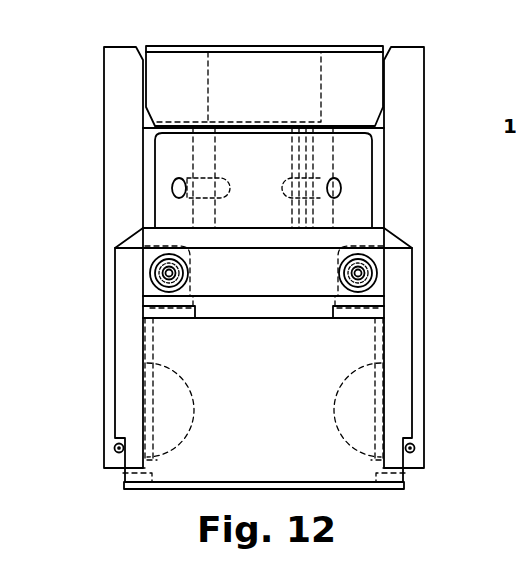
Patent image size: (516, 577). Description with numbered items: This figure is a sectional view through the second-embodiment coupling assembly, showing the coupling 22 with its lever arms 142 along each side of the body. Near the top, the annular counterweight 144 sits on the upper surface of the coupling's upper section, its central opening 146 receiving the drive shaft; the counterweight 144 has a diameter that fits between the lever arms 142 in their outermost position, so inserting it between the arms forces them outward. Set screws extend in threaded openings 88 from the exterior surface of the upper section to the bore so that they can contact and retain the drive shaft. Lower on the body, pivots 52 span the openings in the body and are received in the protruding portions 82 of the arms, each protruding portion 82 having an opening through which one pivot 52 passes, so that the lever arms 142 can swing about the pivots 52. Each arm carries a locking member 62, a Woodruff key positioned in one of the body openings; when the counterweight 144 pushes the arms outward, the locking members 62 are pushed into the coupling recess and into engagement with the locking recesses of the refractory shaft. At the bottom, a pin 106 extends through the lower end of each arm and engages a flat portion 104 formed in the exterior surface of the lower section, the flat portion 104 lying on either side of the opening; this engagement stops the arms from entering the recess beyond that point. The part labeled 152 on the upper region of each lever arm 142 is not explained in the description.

The lower housing body 22 is at (397, 335).
The roller 52 is at (150, 278).
The wheel 62 is at (175, 425).
The roller bracket 82 is at (152, 247).
The pivot opening 88 is at (172, 188).
The base plate 104 is at (124, 483).
The pivot pin 106 is at (113, 446).
The side post 142 is at (124, 122).
The top housing 144 is at (282, 77).
The recess 146 is at (207, 82).
The post upper portion 152 is at (122, 70).